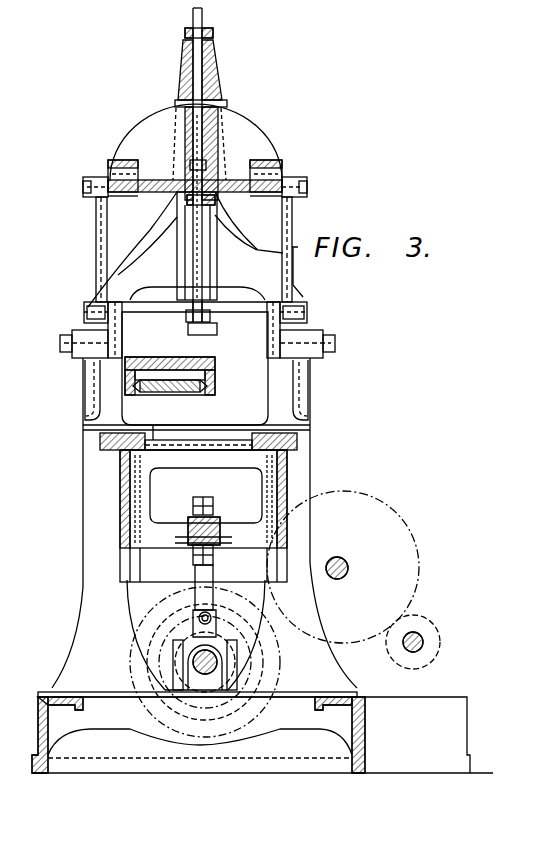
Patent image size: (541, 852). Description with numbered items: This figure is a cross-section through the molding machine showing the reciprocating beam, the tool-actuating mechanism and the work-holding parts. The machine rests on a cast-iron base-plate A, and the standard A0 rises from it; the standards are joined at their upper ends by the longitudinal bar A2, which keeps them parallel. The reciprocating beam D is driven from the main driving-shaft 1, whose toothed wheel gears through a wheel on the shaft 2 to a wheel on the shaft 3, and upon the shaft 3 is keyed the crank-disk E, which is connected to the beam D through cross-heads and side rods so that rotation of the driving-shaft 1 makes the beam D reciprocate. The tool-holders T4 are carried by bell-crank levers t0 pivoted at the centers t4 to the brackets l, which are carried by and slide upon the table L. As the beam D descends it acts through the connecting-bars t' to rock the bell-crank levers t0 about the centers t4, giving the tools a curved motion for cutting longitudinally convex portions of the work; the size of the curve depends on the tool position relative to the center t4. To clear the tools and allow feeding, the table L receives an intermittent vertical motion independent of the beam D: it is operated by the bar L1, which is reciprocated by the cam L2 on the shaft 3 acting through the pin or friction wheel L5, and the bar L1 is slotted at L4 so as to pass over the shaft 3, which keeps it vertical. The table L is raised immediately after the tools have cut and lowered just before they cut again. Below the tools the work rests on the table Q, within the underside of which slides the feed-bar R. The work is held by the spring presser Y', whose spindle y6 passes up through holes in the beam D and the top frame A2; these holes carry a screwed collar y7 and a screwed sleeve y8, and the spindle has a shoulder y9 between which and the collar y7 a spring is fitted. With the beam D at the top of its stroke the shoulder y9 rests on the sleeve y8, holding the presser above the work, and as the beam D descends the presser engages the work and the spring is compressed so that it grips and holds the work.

The screwed collar y7 is at (213, 32).
The longitudinal bar A2 is at (178, 86).
The reciprocating beam D is at (133, 173).
The shoulder y9 is at (206, 166).
The screwed sleeve y8 is at (212, 200).
The connecting-bars t' is at (207, 249).
The spindle or rod y6 is at (203, 300).
The tool-holders T4 is at (208, 306).
The bell-crank levers t0 is at (120, 348).
The pivot centers t4 is at (68, 340).
The table Q is at (188, 357).
The presser Y' is at (218, 343).
The feed-bar R is at (150, 388).
The brackets l is at (88, 396).
The table L is at (203, 516).
The standard A0 is at (100, 509).
The shaft 2 is at (346, 560).
The main driving-shaft 1 is at (423, 641).
The cam L2 is at (176, 612).
The bar L1 is at (216, 606).
The pin or friction wheel L5 is at (211, 620).
The crank-disk E is at (118, 640).
The slot L4 is at (222, 676).
The shaft 3 is at (205, 674).
The base-plate A is at (357, 730).